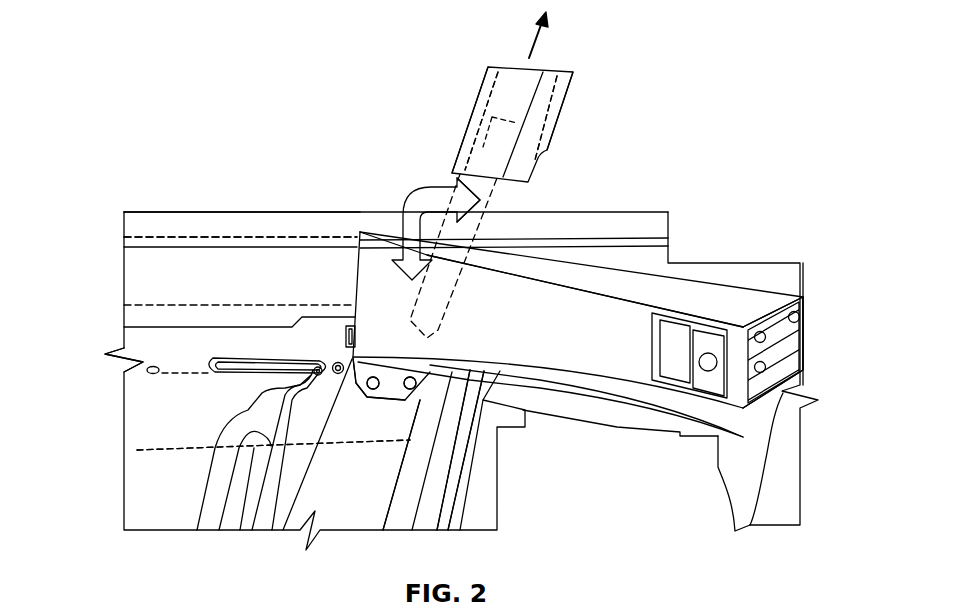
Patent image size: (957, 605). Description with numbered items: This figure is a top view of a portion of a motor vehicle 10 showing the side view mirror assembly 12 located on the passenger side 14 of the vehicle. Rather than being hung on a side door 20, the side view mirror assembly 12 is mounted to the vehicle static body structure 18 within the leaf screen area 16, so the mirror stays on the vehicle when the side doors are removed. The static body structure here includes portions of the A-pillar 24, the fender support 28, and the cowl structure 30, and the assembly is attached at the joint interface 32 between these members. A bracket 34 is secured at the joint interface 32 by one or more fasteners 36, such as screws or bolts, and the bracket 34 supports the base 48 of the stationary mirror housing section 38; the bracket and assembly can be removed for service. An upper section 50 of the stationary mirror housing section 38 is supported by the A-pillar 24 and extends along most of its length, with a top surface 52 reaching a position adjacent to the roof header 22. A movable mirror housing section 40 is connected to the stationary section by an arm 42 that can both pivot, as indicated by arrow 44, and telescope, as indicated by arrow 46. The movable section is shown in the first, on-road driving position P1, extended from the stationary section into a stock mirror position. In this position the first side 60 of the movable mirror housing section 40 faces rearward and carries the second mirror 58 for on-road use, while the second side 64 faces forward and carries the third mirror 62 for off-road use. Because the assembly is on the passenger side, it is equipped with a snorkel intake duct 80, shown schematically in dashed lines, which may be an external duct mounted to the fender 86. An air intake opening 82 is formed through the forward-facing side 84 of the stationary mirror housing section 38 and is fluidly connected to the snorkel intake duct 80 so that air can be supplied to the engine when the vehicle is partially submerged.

The motor vehicle 10 is at (744, 196).
The side view mirror assembly 12 is at (618, 225).
The passenger side 14 is at (314, 200).
The leaf screen area 16 is at (411, 457).
The vehicle static body structure 18 is at (450, 522).
The side door 20 is at (748, 272).
The roof header 22 is at (790, 464).
The A-pillar 24 is at (615, 392).
The fender support 28 is at (143, 347).
The cowl structure 30 is at (408, 418).
The joint interface 32 is at (363, 416).
The bracket 34 is at (407, 395).
The fasteners 36 is at (367, 382).
The stationary mirror housing section 38 is at (658, 279).
The movable mirror housing section 40 is at (503, 79).
The arm 42 is at (489, 210).
The arrow 44 is at (427, 198).
The arrow 46 is at (538, 49).
The base 48 is at (378, 262).
The upper section 50 is at (683, 288).
The top surface 52 is at (783, 337).
The second mirror 58 is at (555, 96).
The first side 60 is at (565, 121).
The third mirror 62 is at (485, 99).
The second side 64 is at (462, 141).
The snorkel intake duct 80 is at (245, 237).
The air intake opening 82 is at (672, 320).
The forward-facing side 84 is at (545, 312).
The fender 86 is at (285, 220).
The first, on-road driving position P1 is at (370, 97).